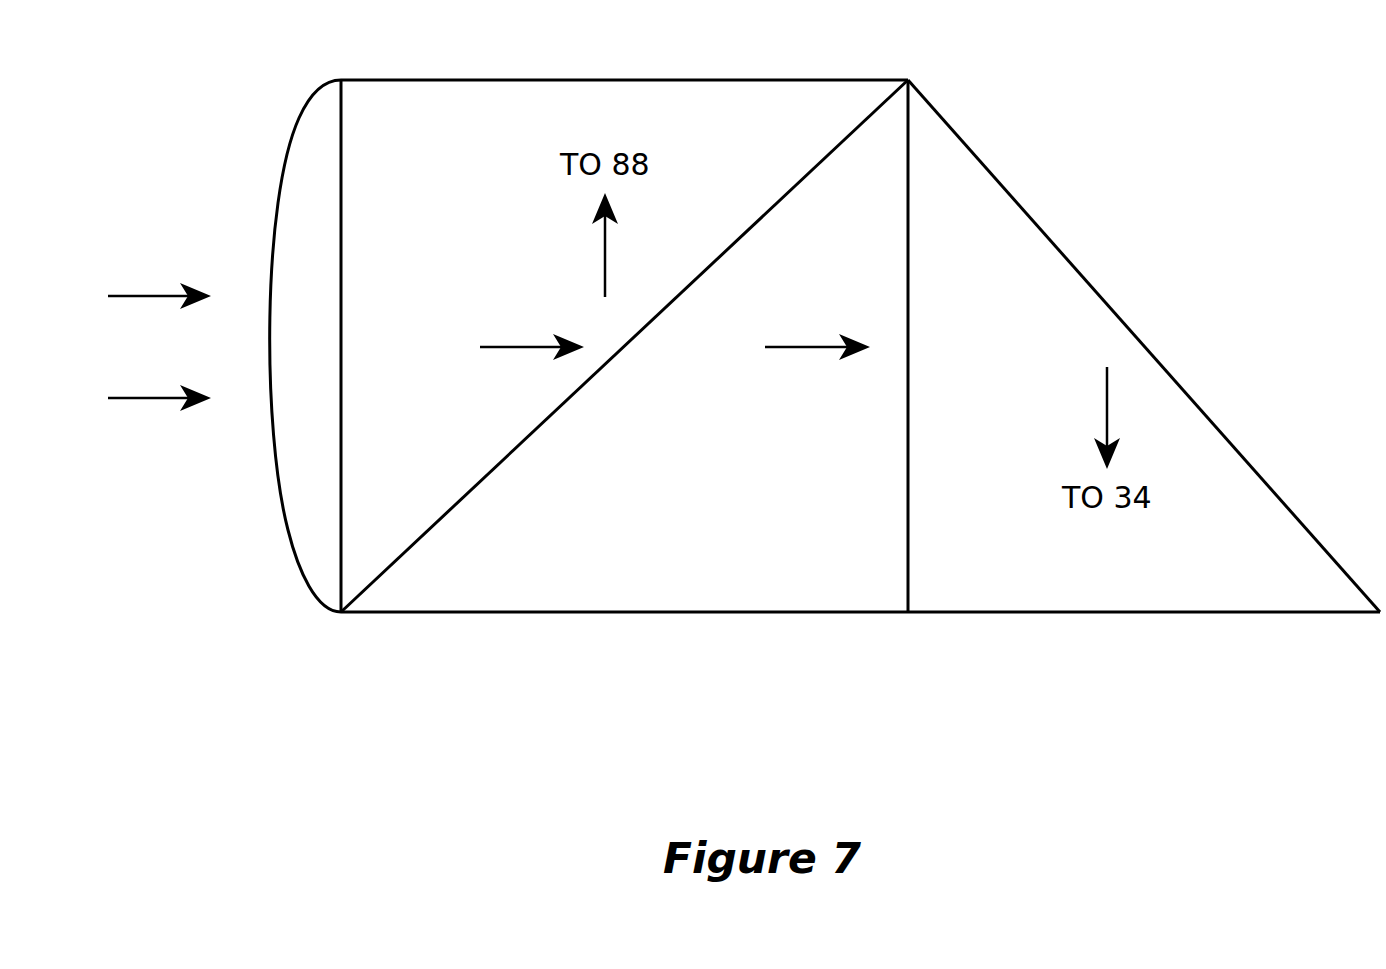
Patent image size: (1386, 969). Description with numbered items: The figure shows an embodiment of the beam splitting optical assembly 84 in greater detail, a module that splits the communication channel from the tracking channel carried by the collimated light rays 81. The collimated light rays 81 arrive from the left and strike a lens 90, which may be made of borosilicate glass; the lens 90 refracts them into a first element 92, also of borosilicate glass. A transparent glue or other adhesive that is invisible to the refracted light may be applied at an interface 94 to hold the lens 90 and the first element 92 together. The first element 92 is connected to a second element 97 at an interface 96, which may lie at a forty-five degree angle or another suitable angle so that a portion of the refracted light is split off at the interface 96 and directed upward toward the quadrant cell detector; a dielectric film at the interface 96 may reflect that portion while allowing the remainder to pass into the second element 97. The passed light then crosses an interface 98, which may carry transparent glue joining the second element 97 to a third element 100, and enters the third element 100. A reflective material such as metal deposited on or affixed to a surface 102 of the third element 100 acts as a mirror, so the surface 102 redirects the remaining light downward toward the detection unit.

The collimated light rays 81 is at (159, 347).
The beam splitting optical assembly 84 is at (1340, 175).
The lens 90 is at (312, 160).
The first element 92 is at (765, 100).
The interface 94 is at (341, 107).
The interface 96 is at (545, 425).
The second element 97 is at (738, 592).
The interface 98 is at (911, 592).
The third element 100 is at (1201, 588).
The surface 102 is at (1080, 272).